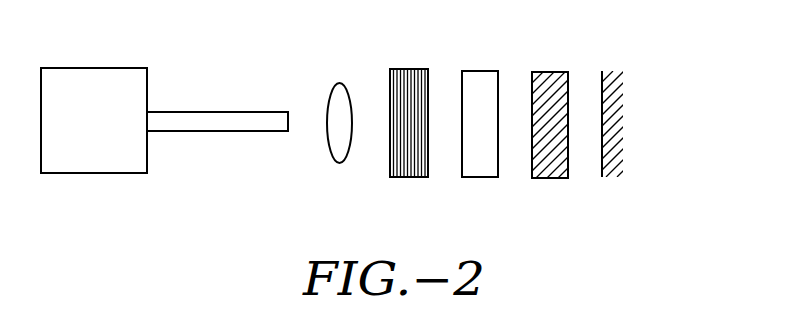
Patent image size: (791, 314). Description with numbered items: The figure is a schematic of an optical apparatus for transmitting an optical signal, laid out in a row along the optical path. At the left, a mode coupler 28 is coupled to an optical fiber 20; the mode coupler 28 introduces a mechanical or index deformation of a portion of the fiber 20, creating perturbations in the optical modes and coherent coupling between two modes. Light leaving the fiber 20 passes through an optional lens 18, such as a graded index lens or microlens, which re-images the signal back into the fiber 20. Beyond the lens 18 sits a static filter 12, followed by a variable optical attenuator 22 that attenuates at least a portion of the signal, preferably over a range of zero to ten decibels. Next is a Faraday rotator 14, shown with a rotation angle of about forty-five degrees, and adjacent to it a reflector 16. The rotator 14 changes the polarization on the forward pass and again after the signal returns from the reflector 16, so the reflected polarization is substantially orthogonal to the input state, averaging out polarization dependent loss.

The mode coupler 28 is at (102, 77).
The optical fiber 20 is at (177, 112).
The lens 18 is at (335, 98).
The static filter 12 is at (390, 68).
The variable optical attenuator 22 is at (478, 80).
The Faraday rotator 14 is at (568, 72).
The reflector 16 is at (615, 92).